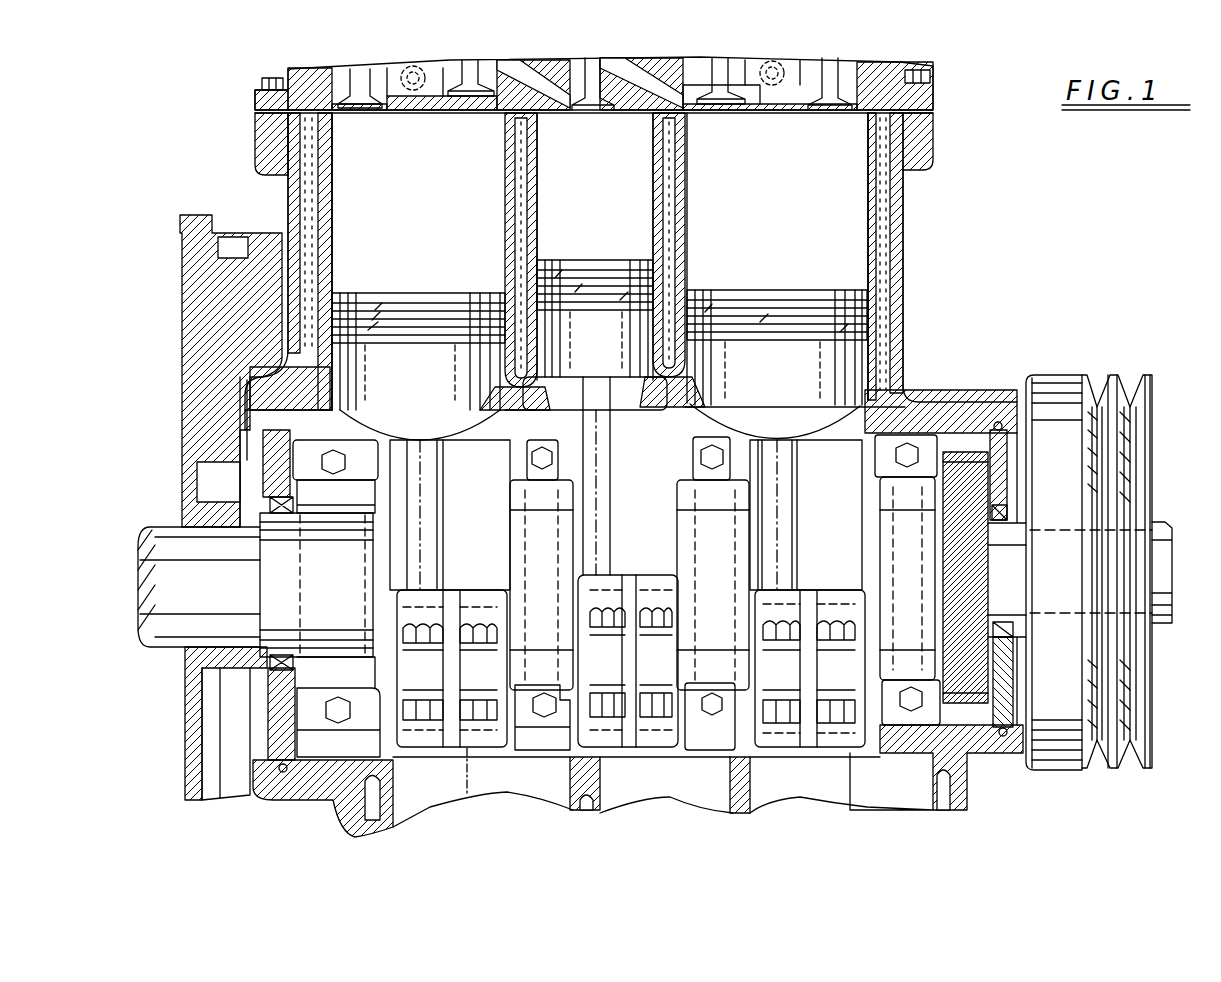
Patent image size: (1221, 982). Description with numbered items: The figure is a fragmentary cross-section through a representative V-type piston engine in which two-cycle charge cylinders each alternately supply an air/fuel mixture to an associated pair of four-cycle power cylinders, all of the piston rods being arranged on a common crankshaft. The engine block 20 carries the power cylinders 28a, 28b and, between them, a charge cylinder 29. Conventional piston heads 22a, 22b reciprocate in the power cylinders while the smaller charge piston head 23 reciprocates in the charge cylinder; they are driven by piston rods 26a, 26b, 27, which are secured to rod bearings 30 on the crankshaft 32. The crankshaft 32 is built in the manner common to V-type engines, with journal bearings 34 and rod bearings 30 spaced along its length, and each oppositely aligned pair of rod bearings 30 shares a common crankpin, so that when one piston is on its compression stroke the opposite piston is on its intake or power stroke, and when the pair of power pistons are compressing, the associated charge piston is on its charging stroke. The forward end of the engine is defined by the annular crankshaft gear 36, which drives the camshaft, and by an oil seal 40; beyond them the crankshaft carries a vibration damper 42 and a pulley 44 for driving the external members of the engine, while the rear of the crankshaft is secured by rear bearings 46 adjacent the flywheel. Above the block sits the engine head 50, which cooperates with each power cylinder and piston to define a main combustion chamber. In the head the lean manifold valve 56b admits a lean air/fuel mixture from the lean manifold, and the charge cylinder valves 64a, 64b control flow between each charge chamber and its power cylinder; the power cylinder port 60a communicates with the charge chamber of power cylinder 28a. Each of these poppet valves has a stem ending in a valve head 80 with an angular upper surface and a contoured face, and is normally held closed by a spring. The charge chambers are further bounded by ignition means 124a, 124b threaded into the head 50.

The engine block 20 is at (905, 330).
The piston head 22a is at (790, 280).
The piston head 22b is at (425, 292).
The piston head 23 is at (591, 262).
The piston rod 26a is at (787, 522).
The piston rod 26b is at (433, 508).
The piston rod 27 is at (602, 470).
The power cylinder 28a is at (838, 222).
The power cylinder 28b is at (425, 190).
The center cylinder 29 is at (585, 186).
The rod bearings 30 is at (470, 740).
The crankshaft 32 is at (1020, 575).
The journal bearings 34 is at (355, 745).
The crankshaft gear 36 is at (958, 462).
The oil seal 40 is at (1004, 494).
The vibration damper 42 is at (1060, 768).
The pulley 44 is at (1150, 757).
The rear bearings 46 is at (350, 594).
The engine head 50 is at (932, 97).
The lean manifold valve 56b is at (357, 103).
The power cylinder port 60a is at (738, 104).
The charge cylinder valve 64a is at (714, 86).
The charge cylinder valve 64b is at (477, 92).
The valve head 80 is at (592, 110).
The ignition means 124a is at (782, 66).
The ignition means 124b is at (410, 132).